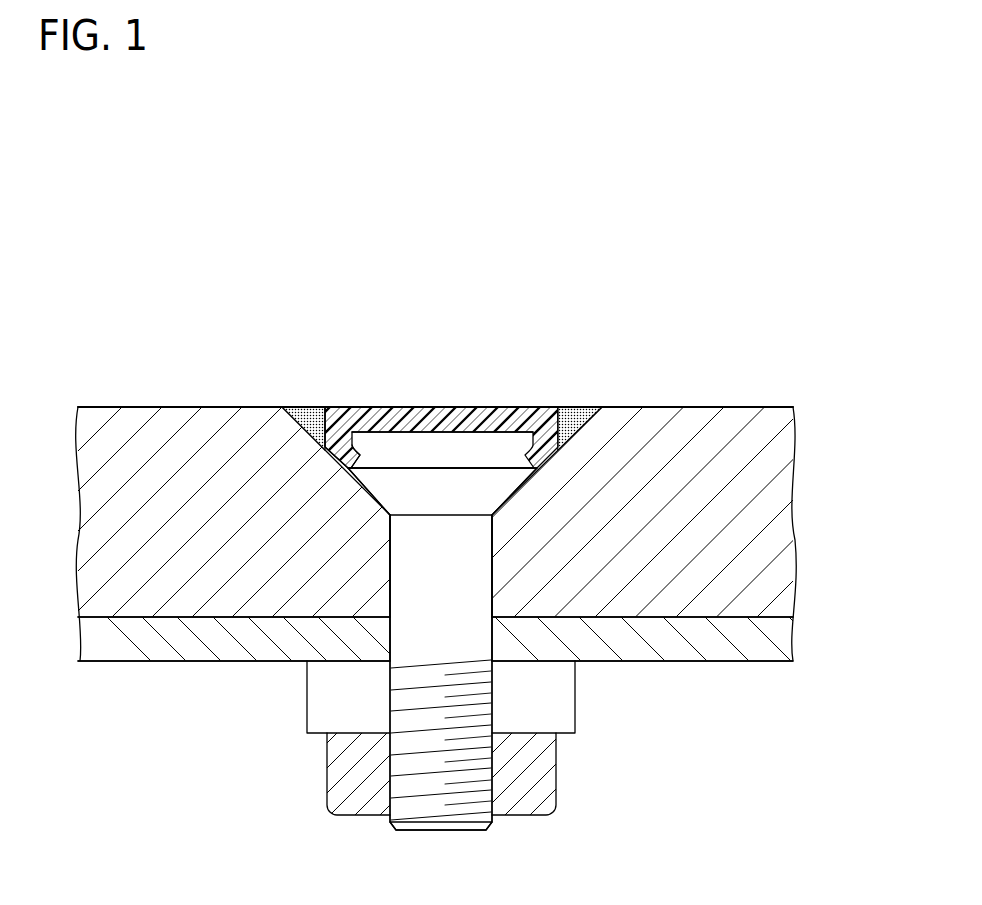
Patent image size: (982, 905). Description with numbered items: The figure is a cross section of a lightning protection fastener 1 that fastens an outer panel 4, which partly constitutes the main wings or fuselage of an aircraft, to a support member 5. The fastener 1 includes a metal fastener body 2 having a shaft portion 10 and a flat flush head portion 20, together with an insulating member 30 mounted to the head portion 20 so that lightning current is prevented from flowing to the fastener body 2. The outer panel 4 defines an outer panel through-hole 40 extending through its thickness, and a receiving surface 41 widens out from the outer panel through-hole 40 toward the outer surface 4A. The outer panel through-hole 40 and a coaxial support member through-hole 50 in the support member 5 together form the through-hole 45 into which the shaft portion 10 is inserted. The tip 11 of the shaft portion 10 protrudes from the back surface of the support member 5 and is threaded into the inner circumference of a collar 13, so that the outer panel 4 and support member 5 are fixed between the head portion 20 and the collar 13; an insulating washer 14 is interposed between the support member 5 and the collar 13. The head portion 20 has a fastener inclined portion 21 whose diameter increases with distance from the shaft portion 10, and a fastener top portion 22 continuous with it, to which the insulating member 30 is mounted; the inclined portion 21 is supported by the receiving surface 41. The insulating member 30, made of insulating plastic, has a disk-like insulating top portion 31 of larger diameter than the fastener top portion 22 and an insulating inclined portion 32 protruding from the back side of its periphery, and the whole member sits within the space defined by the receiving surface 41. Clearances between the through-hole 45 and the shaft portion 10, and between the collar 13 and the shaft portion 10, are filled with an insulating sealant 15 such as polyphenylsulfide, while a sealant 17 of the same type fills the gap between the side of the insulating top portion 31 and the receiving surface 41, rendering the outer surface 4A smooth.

The lightning protection fastener 1 is at (524, 364).
The fastener body 2 is at (530, 418).
The outer panel 4 is at (743, 407).
The outer surface 4A is at (170, 407).
The support member 5 is at (740, 662).
The shaft portion 10 is at (488, 633).
The tip 11 is at (473, 830).
The collar 13 is at (327, 777).
The insulating washer 14 is at (307, 712).
The insulating sealant 15 is at (390, 576).
The sealant 17 is at (360, 487).
The head portion 20 is at (490, 425).
The fastener inclined portion 21 is at (300, 418).
The fastener top portion 22 is at (443, 438).
The insulating member 30 is at (392, 400).
The insulating top portion 31 is at (340, 445).
The insulating inclined portion 32 is at (319, 428).
The outer panel through-hole 40 is at (500, 550).
The receiving surface 41 is at (583, 407).
The through-hole 45 is at (400, 635).
The support member through-hole 50 is at (492, 647).